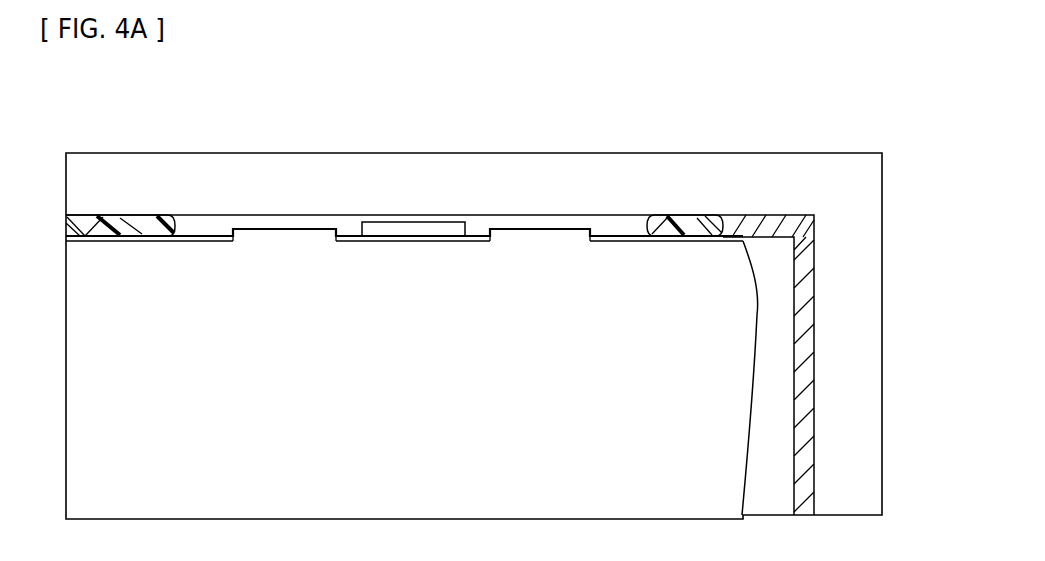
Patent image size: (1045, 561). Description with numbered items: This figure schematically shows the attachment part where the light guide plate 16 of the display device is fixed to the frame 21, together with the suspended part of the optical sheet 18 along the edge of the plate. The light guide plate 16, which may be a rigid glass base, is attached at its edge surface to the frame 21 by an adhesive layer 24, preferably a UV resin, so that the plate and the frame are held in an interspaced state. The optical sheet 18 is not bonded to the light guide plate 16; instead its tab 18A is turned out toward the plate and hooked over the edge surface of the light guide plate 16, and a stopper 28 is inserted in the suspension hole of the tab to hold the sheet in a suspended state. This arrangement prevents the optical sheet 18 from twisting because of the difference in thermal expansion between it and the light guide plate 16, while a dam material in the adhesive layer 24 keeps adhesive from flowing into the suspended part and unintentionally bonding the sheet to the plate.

The light guide plate 16 is at (777, 363).
The optical sheet 18 is at (737, 308).
The tab 18A is at (532, 229).
The frame 21 is at (873, 183).
The adhesive layer 24 is at (805, 238).
The stopper 28 is at (412, 232).